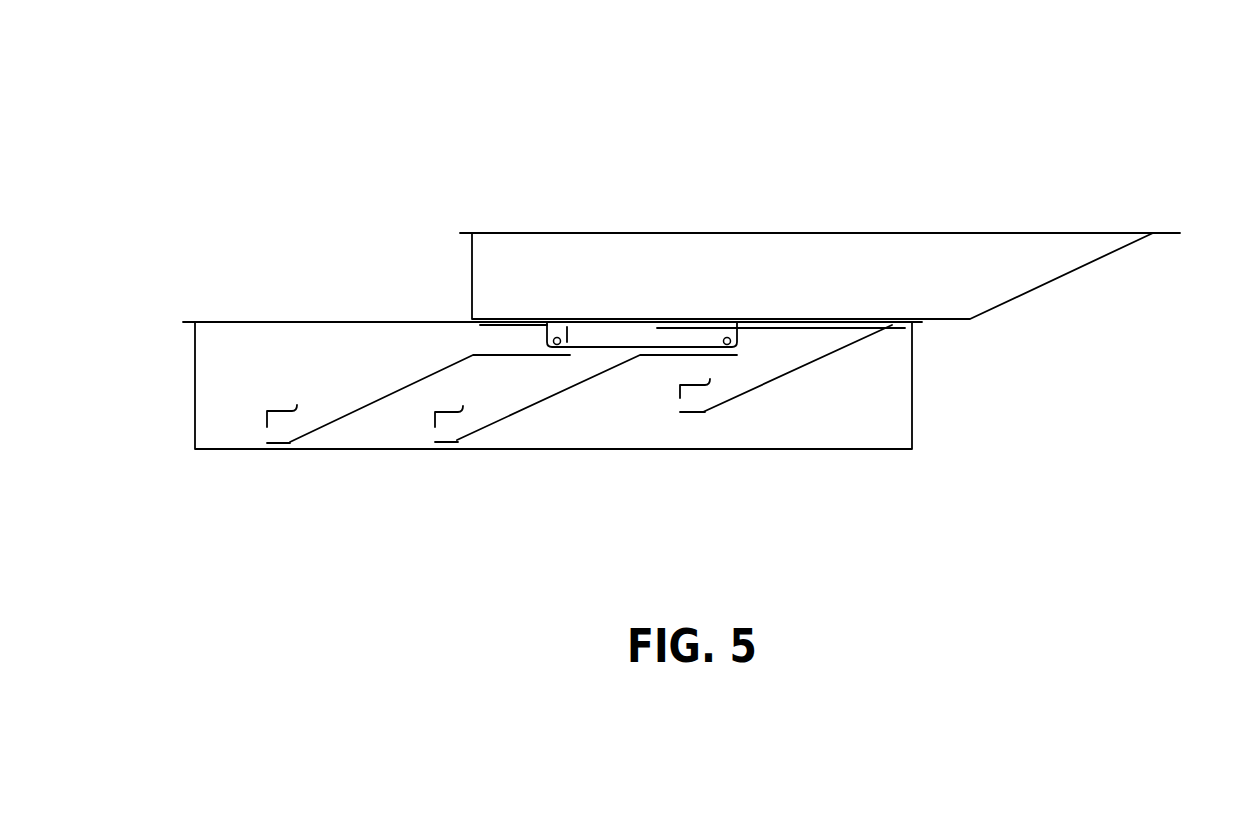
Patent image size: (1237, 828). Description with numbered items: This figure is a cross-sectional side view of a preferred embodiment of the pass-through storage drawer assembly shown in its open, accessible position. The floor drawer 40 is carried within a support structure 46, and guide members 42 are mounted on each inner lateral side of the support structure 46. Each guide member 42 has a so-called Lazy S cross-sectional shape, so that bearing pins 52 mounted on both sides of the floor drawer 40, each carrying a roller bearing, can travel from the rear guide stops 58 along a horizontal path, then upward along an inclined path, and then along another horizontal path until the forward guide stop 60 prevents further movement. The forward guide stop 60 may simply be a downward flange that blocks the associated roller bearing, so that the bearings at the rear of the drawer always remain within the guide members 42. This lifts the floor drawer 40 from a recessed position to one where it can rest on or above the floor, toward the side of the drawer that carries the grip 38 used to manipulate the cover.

The grip 38 is at (1152, 234).
The floor drawer 40 is at (802, 253).
The guide members 42 is at (358, 413).
The support structure 46 is at (857, 410).
The bearing pin 52 is at (547, 340).
The rear guide stop 58 is at (282, 410).
The forward guide stop 60 is at (572, 333).